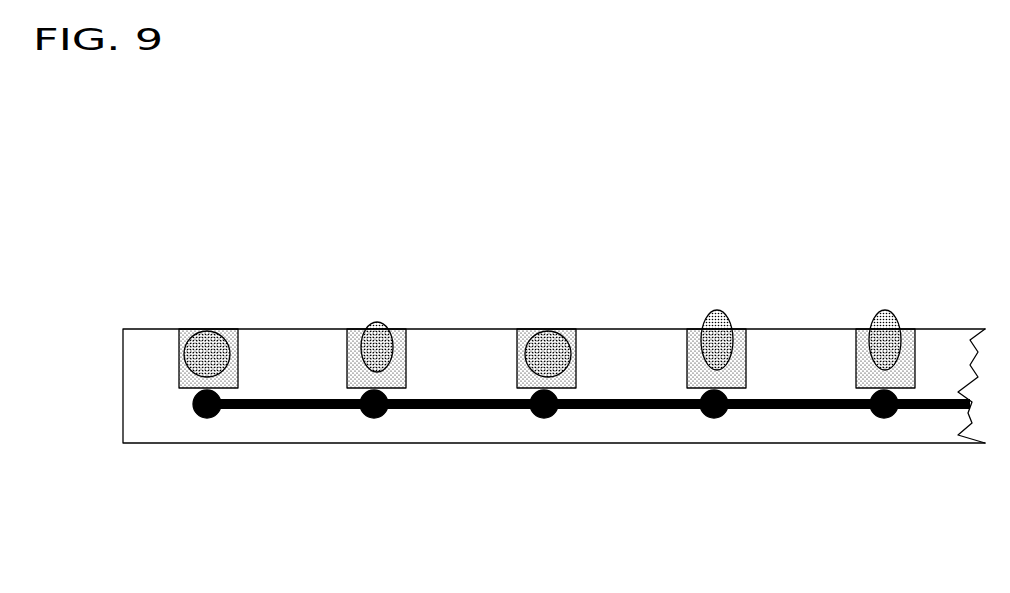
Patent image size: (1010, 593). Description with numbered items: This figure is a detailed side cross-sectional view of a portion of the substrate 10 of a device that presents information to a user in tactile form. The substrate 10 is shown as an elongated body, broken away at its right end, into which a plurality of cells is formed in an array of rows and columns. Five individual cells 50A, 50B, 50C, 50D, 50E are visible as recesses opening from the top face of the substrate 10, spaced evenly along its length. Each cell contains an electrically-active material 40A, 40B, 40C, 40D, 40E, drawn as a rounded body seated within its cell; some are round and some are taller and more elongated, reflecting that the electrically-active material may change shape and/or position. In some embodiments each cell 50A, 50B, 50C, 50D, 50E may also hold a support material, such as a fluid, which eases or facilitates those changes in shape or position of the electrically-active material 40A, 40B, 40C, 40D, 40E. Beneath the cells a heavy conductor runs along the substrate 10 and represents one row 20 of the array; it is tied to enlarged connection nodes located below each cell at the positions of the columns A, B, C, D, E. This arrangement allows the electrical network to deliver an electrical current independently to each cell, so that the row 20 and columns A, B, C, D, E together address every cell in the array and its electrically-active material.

The substrate 10 is at (912, 428).
The row 20 is at (305, 410).
The electrically-active material 40A is at (213, 335).
The electrically-active material 40B is at (378, 337).
The electrically-active material 40C is at (548, 340).
The electrically-active material 40D is at (720, 318).
The electrically-active material 40E is at (885, 320).
The cell 50A is at (185, 333).
The cell 50B is at (355, 333).
The cell 50C is at (522, 335).
The cell 50D is at (697, 340).
The cell 50E is at (863, 337).
The column A is at (205, 417).
The column B is at (368, 417).
The column C is at (538, 417).
The column D is at (708, 417).
The column E is at (878, 417).